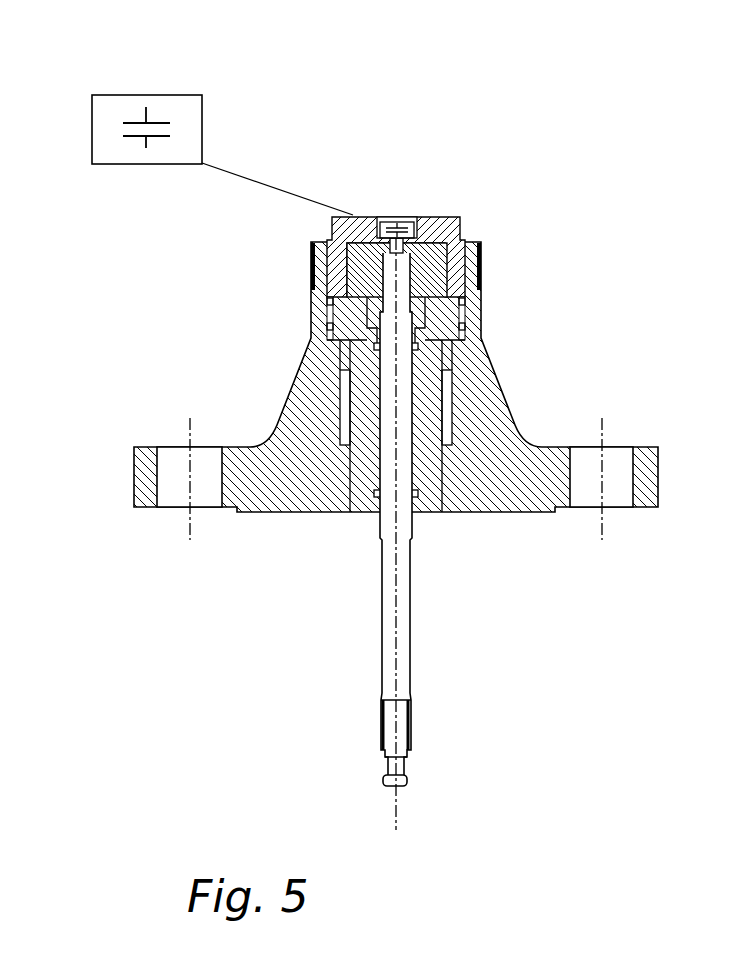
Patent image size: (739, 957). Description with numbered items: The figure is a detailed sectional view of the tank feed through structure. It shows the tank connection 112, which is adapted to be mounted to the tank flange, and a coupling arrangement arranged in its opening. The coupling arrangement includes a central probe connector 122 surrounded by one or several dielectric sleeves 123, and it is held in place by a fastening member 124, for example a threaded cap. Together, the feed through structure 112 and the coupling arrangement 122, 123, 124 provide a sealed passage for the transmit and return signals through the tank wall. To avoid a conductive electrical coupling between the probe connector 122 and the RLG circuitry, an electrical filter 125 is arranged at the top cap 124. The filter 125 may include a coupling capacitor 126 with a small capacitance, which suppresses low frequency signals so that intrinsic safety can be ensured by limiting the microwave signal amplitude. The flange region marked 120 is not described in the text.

The tank connection 112 is at (500, 427).
The flange mounting bore 120 is at (172, 460).
The central probe connector 122 is at (400, 628).
The dielectric sleeves 123 is at (360, 352).
The fastening member 124 is at (447, 215).
The electrical filter 125 is at (203, 122).
The coupling capacitor 126 is at (133, 122).